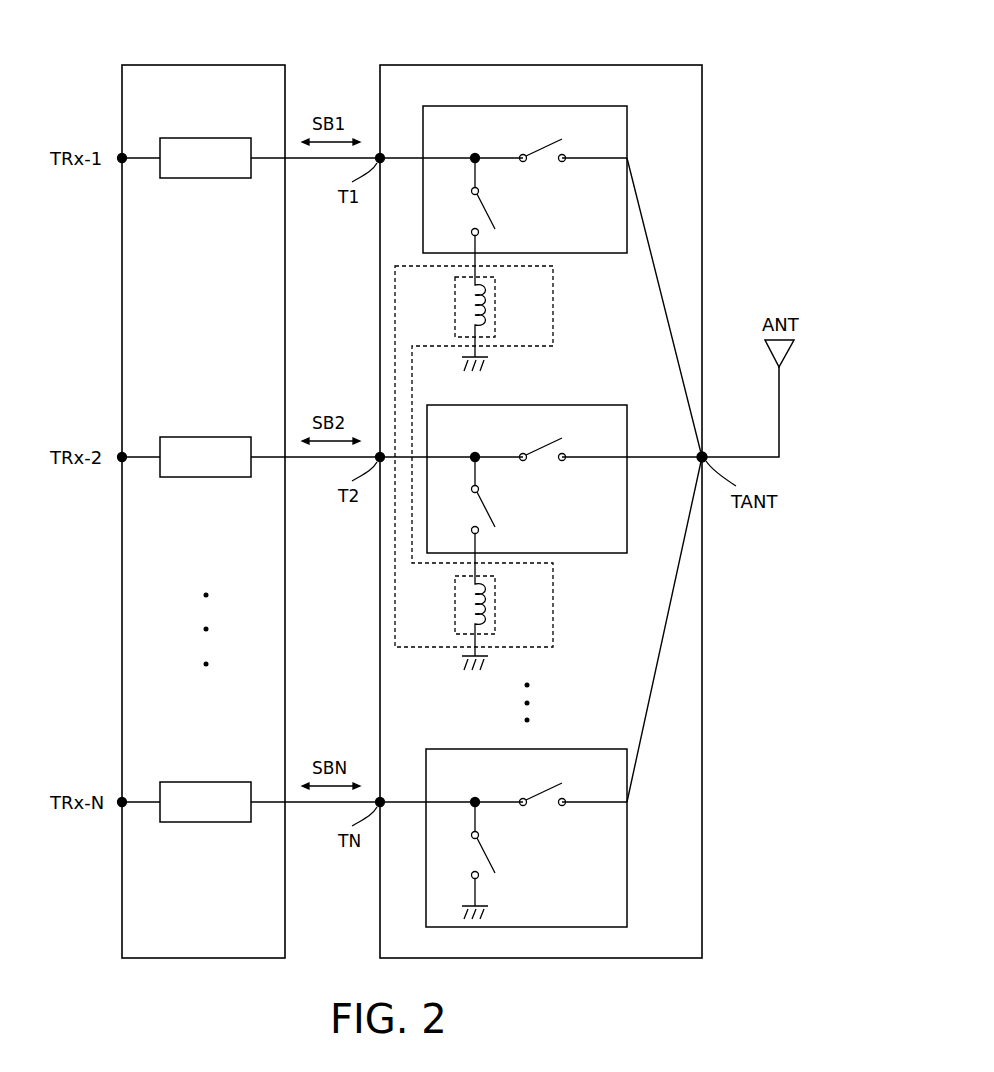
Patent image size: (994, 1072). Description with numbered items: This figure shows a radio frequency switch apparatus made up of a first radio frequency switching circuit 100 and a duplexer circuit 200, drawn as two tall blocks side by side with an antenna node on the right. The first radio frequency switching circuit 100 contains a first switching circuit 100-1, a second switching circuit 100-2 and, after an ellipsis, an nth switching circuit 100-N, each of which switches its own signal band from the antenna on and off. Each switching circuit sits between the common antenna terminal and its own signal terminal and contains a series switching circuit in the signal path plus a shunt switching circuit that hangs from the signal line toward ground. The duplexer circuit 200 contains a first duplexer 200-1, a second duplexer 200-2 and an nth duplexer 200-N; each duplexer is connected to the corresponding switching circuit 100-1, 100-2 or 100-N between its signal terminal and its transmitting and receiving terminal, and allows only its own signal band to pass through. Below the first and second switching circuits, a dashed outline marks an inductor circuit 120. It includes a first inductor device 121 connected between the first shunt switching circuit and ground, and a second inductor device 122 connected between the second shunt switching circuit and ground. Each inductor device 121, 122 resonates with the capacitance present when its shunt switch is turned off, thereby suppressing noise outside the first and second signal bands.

The first radio frequency switching circuit 100 is at (650, 65).
The duplexer circuit 200 is at (214, 65).
The first switching circuit 100-1 is at (553, 106).
The second switching circuit 100-2 is at (553, 405).
The nth switching circuit 100-N is at (553, 749).
The first duplexer 200-1 is at (185, 138).
The second duplexer 200-2 is at (185, 437).
The nth duplexer 200-N is at (185, 782).
The inductor circuit 120 is at (553, 302).
The first inductor device 121 is at (495, 297).
The second inductor device 122 is at (495, 596).